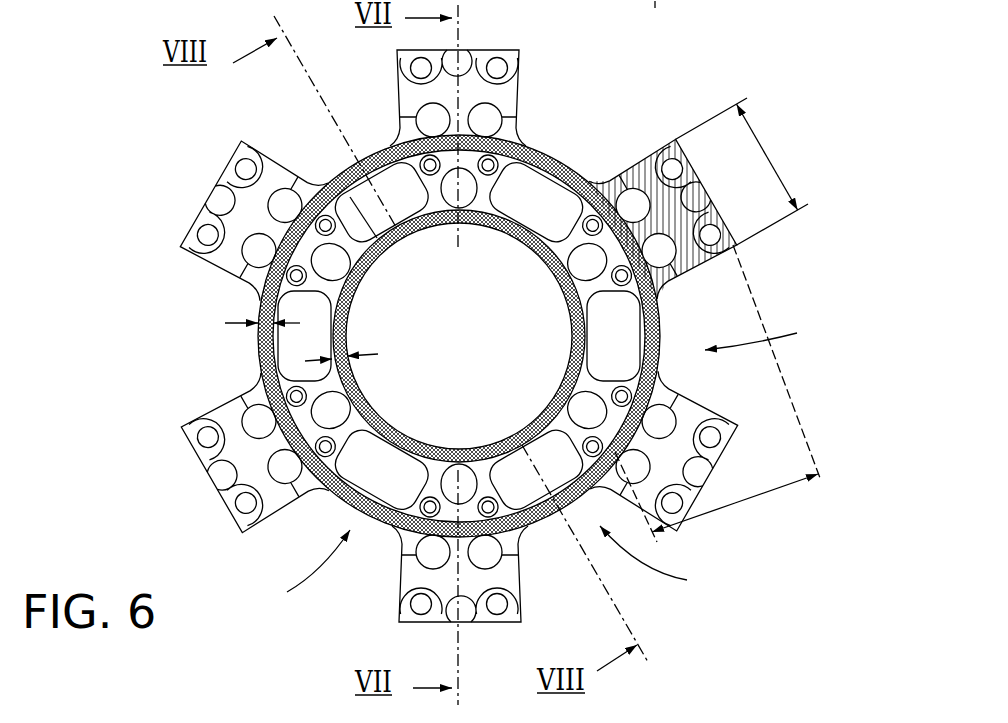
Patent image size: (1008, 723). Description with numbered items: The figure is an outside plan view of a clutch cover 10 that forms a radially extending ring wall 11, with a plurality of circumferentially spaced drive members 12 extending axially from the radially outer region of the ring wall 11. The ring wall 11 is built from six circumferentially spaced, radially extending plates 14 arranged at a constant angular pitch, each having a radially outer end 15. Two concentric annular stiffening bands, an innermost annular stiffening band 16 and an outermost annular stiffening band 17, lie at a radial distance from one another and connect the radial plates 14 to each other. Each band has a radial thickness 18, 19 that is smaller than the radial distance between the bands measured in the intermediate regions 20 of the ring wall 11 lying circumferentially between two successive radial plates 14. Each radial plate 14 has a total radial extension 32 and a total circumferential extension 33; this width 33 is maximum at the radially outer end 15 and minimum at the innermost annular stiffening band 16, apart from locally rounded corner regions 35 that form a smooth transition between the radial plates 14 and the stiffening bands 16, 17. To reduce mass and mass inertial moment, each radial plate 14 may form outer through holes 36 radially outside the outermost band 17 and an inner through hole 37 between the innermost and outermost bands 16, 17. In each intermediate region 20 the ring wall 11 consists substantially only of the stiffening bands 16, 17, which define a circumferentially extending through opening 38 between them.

The clutch cover 10 is at (797, 333).
The ring wall 11 is at (459, 378).
The drive member 12 is at (641, 14).
The radially extending plate 14 is at (493, 99).
The radially outer end 15 is at (465, 45).
The innermost annular stiffening band 16 is at (328, 181).
The outermost annular stiffening band 17 is at (372, 186).
The radial thickness 18 is at (378, 354).
The radial thickness 19 is at (225, 323).
The intermediate region 20 is at (287, 592).
The radial extension 32 is at (761, 494).
The circumferential extension 33 is at (768, 158).
The rounded corner region 35 is at (592, 184).
The outer through hole 36 is at (430, 557).
The inner through hole 37 is at (460, 460).
The through opening 38 is at (388, 197).